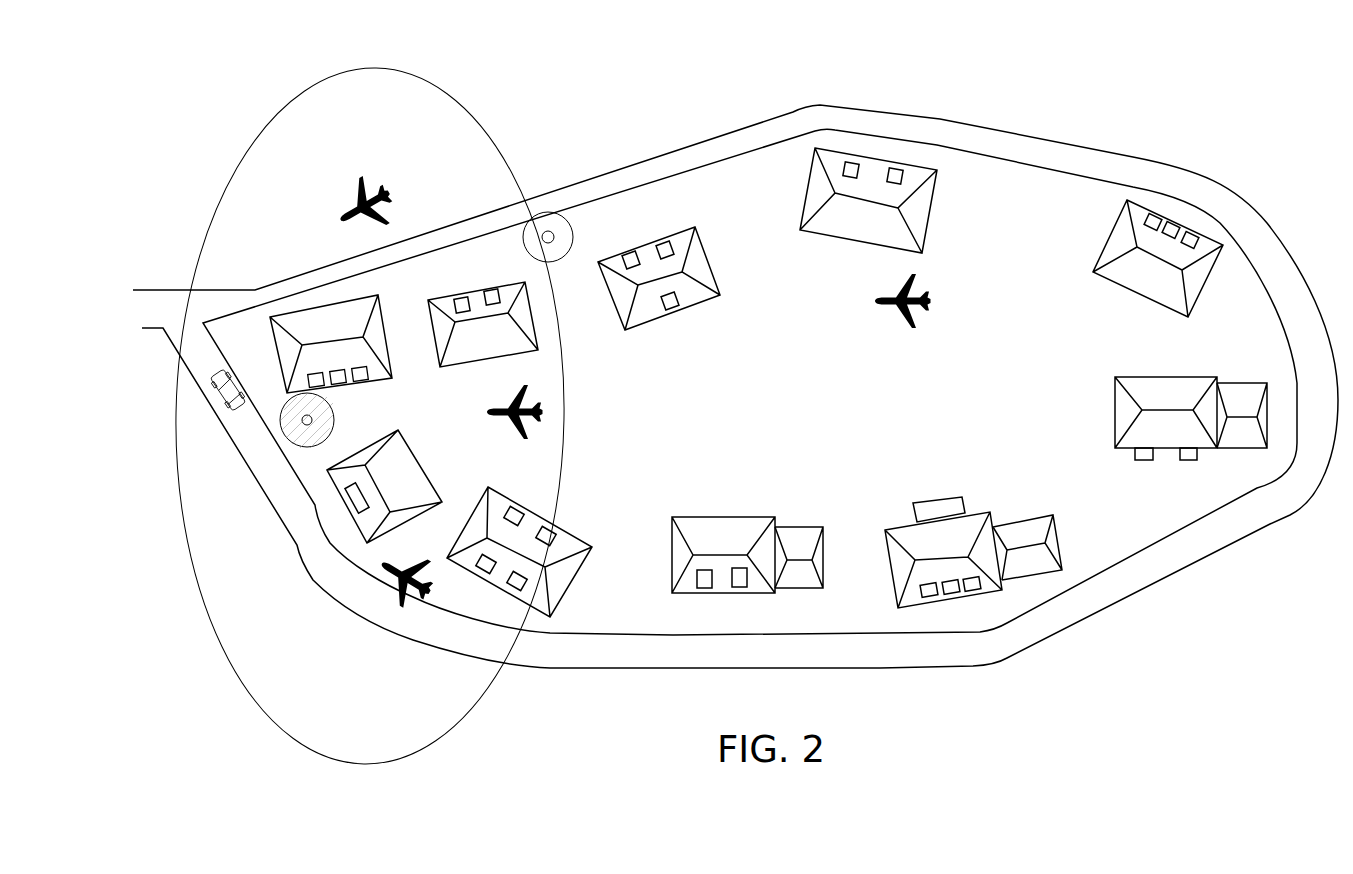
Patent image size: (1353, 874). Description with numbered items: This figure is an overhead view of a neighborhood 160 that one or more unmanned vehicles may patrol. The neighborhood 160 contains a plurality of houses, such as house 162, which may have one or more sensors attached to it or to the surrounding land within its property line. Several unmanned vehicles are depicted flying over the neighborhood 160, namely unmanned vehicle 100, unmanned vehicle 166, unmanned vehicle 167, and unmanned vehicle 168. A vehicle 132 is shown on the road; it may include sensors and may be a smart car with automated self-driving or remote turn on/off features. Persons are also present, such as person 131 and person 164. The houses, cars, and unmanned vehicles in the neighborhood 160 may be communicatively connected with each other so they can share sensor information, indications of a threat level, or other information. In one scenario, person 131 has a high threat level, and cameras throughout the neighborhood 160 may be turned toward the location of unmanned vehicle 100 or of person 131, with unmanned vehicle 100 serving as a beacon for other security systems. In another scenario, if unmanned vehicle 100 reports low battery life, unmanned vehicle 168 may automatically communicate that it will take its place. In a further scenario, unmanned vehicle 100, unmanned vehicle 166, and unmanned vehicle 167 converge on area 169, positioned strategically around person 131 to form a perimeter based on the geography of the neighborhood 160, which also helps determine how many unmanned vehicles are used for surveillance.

The unmanned vehicle 100 is at (542, 412).
The person 131 is at (305, 450).
The vehicle 132 is at (237, 412).
The neighborhood 160 is at (532, 34).
The house 162 is at (278, 348).
The person 164 is at (573, 228).
The unmanned vehicle 166 is at (360, 194).
The unmanned vehicle 167 is at (421, 597).
The unmanned vehicle 168 is at (930, 299).
The area 169 is at (380, 762).